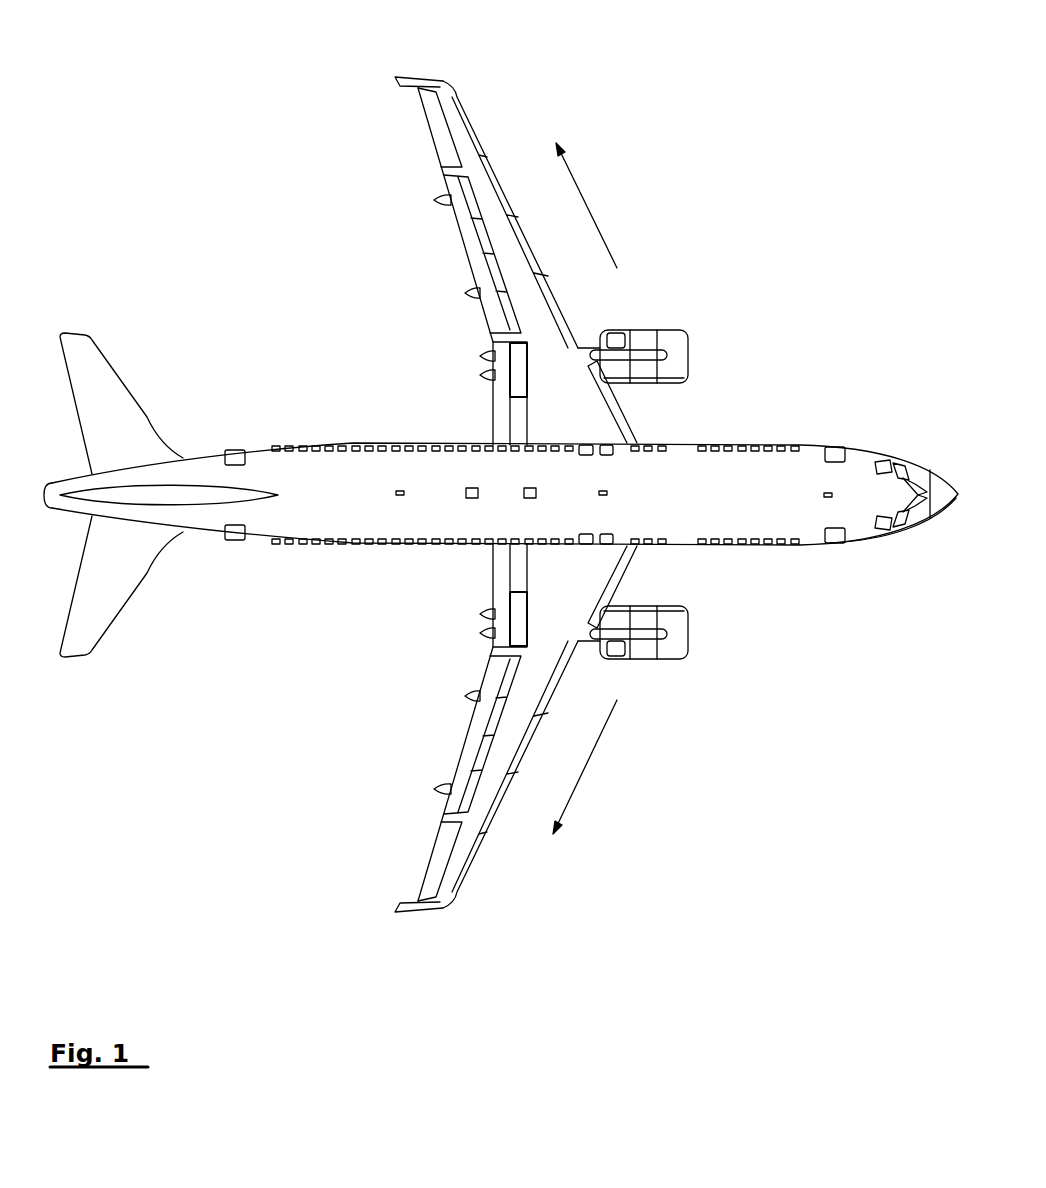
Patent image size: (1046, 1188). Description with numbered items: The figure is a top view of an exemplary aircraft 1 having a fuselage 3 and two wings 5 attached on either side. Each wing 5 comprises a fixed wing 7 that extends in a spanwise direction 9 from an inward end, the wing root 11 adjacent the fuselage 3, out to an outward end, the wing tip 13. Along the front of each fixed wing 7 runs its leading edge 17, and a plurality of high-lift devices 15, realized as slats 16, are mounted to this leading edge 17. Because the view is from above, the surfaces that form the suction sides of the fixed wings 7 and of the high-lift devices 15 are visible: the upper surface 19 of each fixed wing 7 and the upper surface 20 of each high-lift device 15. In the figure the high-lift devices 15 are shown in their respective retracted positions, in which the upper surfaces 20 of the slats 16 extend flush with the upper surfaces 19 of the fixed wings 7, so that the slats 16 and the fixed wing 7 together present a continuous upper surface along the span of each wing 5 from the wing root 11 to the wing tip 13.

The aircraft 1 is at (257, 175).
The fuselage 3 is at (345, 515).
The wing 5 is at (445, 272).
The fixed wing 7 is at (537, 333).
The spanwise direction 9 is at (591, 214).
The wing root 11 is at (560, 417).
The wing tip 13 is at (417, 60).
The high-lift device 15 is at (497, 187).
The slat 16 is at (645, 506).
The leading edge 17 is at (457, 66).
The upper surface of the fixed wing 19 is at (583, 397).
The upper surface of the high-lift device 20 is at (731, 506).